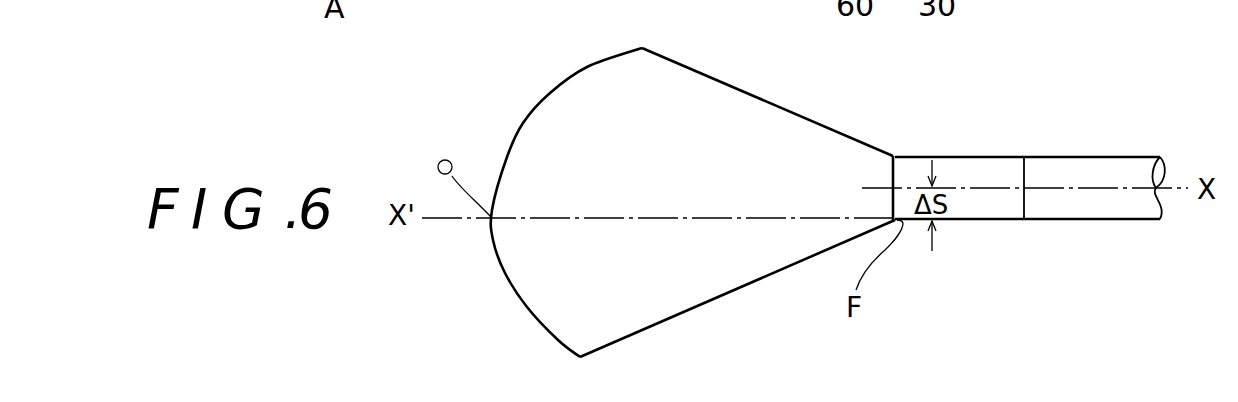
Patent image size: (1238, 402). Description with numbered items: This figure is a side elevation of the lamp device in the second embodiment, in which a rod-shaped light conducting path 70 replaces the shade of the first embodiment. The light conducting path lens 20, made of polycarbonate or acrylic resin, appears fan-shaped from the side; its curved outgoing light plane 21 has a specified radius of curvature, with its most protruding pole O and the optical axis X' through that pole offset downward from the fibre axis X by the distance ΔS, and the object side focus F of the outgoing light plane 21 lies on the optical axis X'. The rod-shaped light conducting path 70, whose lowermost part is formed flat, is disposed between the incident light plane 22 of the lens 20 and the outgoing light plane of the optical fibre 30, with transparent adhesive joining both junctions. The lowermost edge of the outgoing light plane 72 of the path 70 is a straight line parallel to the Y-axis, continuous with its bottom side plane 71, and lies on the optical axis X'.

The light conducting path lens 20 is at (724, 179).
The outgoing light plane 21 is at (551, 98).
The incident light plane 22 is at (899, 171).
The optical fibre 30 is at (1070, 184).
The rod-shaped light conducting path 70 is at (977, 205).
The bottom side plane 71 is at (913, 221).
The outgoing light plane 72 is at (893, 200).